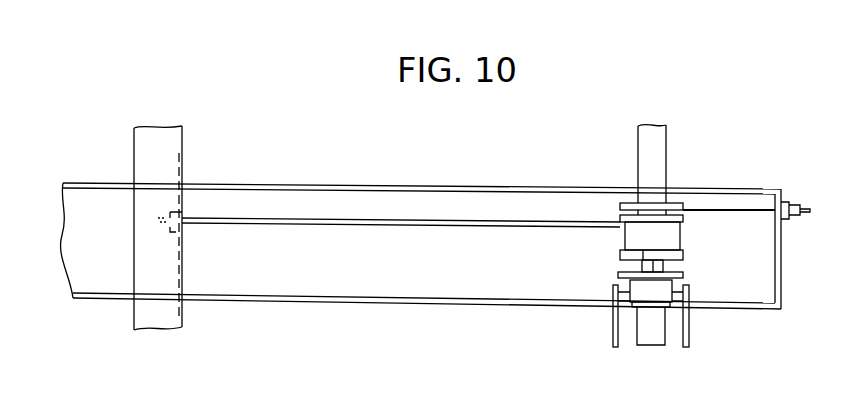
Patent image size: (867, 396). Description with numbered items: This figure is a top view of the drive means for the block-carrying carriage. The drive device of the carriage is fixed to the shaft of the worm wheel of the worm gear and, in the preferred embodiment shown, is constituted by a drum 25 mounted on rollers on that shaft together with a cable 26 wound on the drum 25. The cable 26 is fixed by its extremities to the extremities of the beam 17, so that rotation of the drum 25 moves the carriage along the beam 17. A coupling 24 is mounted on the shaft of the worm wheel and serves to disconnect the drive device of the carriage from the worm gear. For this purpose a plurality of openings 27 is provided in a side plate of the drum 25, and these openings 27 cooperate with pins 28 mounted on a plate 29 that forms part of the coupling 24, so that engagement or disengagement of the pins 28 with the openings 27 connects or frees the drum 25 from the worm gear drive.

The beam 17 is at (277, 197).
The cable 26 is at (435, 220).
The drum 25 is at (635, 210).
The openings 27 is at (665, 263).
The pins 28 is at (640, 263).
The plate 29 is at (620, 278).
The coupling 24 is at (697, 318).